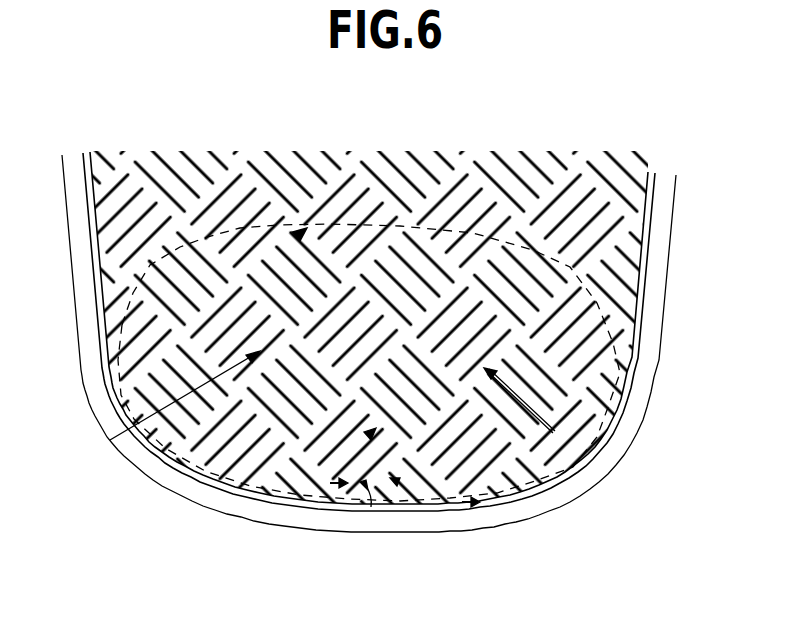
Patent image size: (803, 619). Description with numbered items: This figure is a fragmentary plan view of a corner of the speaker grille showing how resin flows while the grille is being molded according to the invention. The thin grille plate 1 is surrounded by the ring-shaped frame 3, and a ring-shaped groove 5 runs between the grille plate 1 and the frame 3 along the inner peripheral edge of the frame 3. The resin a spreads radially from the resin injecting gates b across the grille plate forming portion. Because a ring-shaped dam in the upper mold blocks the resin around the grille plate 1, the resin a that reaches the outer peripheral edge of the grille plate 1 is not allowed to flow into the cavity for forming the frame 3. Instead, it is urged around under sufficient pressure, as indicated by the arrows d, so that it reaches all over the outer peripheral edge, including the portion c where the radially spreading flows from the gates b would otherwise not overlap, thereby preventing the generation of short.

The grille plate 1 is at (626, 252).
The frame 3 is at (660, 335).
The ring-shaped groove 5 is at (549, 480).
The resin a is at (372, 432).
The resin injecting gates b is at (110, 440).
The portion c is at (372, 508).
The arrows d is at (320, 505).